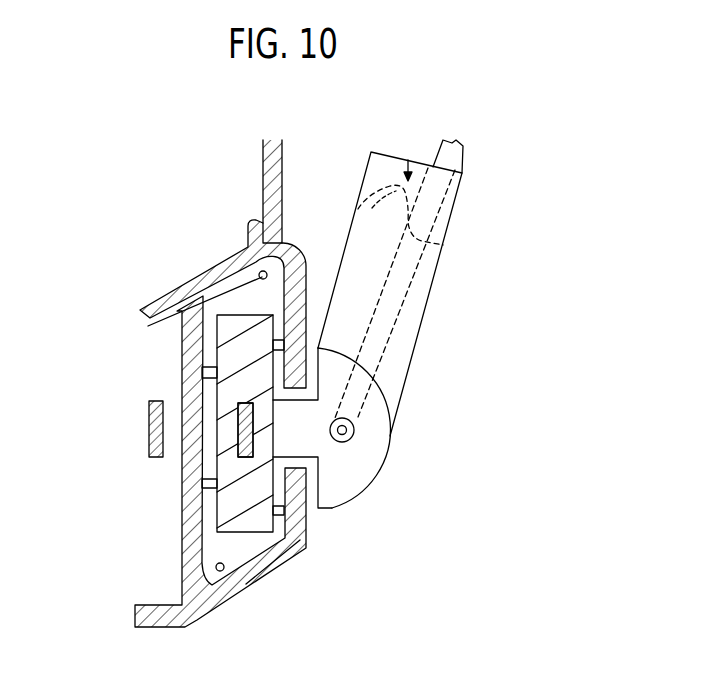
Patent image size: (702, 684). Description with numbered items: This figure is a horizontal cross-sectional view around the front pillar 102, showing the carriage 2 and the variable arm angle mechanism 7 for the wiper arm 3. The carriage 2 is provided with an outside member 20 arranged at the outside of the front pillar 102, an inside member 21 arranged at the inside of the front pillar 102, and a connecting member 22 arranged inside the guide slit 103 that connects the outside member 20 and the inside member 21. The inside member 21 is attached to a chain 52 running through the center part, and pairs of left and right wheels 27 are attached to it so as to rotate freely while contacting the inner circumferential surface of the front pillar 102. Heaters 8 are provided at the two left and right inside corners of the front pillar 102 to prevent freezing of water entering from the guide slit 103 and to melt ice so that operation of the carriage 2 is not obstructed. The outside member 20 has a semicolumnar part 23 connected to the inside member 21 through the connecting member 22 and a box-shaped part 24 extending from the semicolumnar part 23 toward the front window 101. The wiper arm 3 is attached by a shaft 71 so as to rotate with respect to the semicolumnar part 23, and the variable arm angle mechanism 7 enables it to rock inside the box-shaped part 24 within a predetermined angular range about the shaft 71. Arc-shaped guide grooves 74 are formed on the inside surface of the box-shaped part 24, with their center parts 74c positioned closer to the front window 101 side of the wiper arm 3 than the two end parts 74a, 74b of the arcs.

The carriage 2 is at (407, 406).
The wiper arm 3 is at (464, 155).
The variable arm angle mechanism 7 is at (425, 176).
The heater 8 is at (259, 272).
The outside member 20 is at (510, 312).
The inside member 21 is at (247, 343).
The connecting member 22 is at (288, 428).
The semicolumnar part 23 is at (405, 372).
The box-shaped part 24 is at (407, 328).
The wheels 27 is at (308, 292).
The chain 52 is at (238, 408).
The shaft 71 is at (354, 432).
The guide grooves 74 is at (400, 185).
The end part of the arc 74a is at (360, 210).
The end part of the arc 74b is at (445, 212).
The center part of the arc 74c is at (443, 245).
The front window 101 is at (268, 180).
The front pillar 102 is at (272, 570).
The guide slit 103 is at (290, 462).